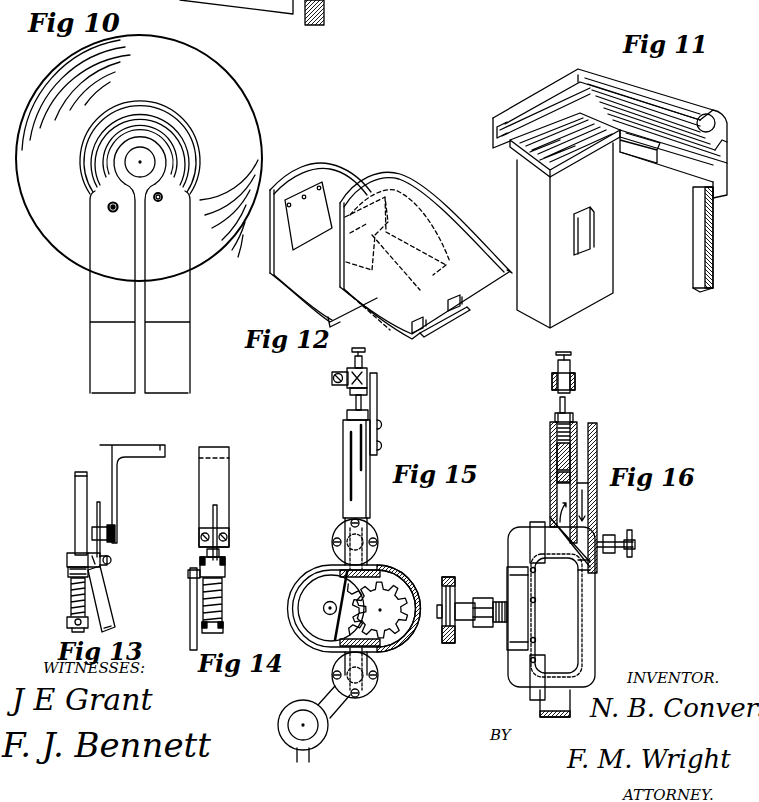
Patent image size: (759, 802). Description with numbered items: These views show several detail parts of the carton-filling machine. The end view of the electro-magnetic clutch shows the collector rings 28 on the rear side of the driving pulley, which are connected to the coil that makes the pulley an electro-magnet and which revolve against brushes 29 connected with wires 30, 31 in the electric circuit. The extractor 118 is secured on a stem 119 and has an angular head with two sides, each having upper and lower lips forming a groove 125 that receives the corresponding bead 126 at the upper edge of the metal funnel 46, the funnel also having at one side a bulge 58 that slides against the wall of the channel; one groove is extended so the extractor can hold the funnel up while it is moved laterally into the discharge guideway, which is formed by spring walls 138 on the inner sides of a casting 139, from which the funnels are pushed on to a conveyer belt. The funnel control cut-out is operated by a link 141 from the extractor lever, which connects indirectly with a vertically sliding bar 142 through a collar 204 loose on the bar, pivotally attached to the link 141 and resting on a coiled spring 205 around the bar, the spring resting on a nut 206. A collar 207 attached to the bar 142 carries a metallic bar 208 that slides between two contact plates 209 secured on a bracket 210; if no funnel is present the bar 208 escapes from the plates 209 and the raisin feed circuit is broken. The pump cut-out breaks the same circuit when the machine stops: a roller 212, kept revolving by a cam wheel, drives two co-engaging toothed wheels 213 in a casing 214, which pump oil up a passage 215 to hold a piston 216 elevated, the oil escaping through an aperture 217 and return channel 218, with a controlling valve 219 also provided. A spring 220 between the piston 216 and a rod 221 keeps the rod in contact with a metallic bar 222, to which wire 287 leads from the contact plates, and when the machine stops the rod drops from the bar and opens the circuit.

In FIG. 10, the collector rings 28 is at (173, 147).
In FIG. 10, the brushes 29 is at (109, 209).
In FIG. 10, the wire 30 is at (90, 197).
In FIG. 10, the wire 31 is at (167, 197).
In FIG. 11, the metal funnel 46 is at (565, 235).
In FIG. 11, the bulge 58 is at (588, 242).
In FIG. 11, the extractor 118 is at (566, 80).
In FIG. 11, the stem 119 is at (702, 237).
In FIG. 11, the groove 125 is at (508, 146).
In FIG. 11, the bead 126 is at (522, 170).
In FIG. 12, the spring walls 138 is at (308, 216).
In FIG. 12, the casting 139 is at (391, 251).
In FIG. 13, the link 141 is at (97, 602).
In FIG. 13, the vertically sliding bar 142 is at (75, 482).
In FIG. 13, the collar 204 is at (68, 572).
In FIG. 13, the coiled spring 205 is at (71, 586).
In FIG. 13, the nut 206 is at (67, 622).
In FIG. 13, the collar 207 is at (67, 556).
In FIG. 13, the metallic bar 208 is at (97, 516).
In FIG. 14, the metallic bar 208 is at (218, 512).
In FIG. 14, the contact plates 209 is at (233, 538).
In FIG. 13, the bracket 210 is at (117, 487).
In FIG. 14, the bracket 210 is at (225, 492).
In FIG. 15, the roller 212 is at (307, 597).
In FIG. 16, the roller 212 is at (448, 578).
In FIG. 15, the toothed wheels 213 is at (403, 568).
In FIG. 15, the casing 214 is at (407, 638).
In FIG. 16, the passage 215 is at (563, 505).
In FIG. 15, the piston 216 is at (348, 415).
In FIG. 16, the piston 216 is at (573, 417).
In FIG. 16, the aperture 217 is at (578, 483).
In FIG. 16, the return channel 218 is at (583, 500).
In FIG. 16, the controlling valve 219 is at (634, 543).
In FIG. 16, the spring 220 is at (553, 457).
In FIG. 16, the rod 221 is at (560, 402).
In FIG. 16, the metallic bar 222 is at (570, 366).
In FIG. 13, the wire 287 is at (116, 530).
In FIG. 14, the wire 287 is at (204, 536).
In FIG. 15, the wire 287 is at (365, 363).